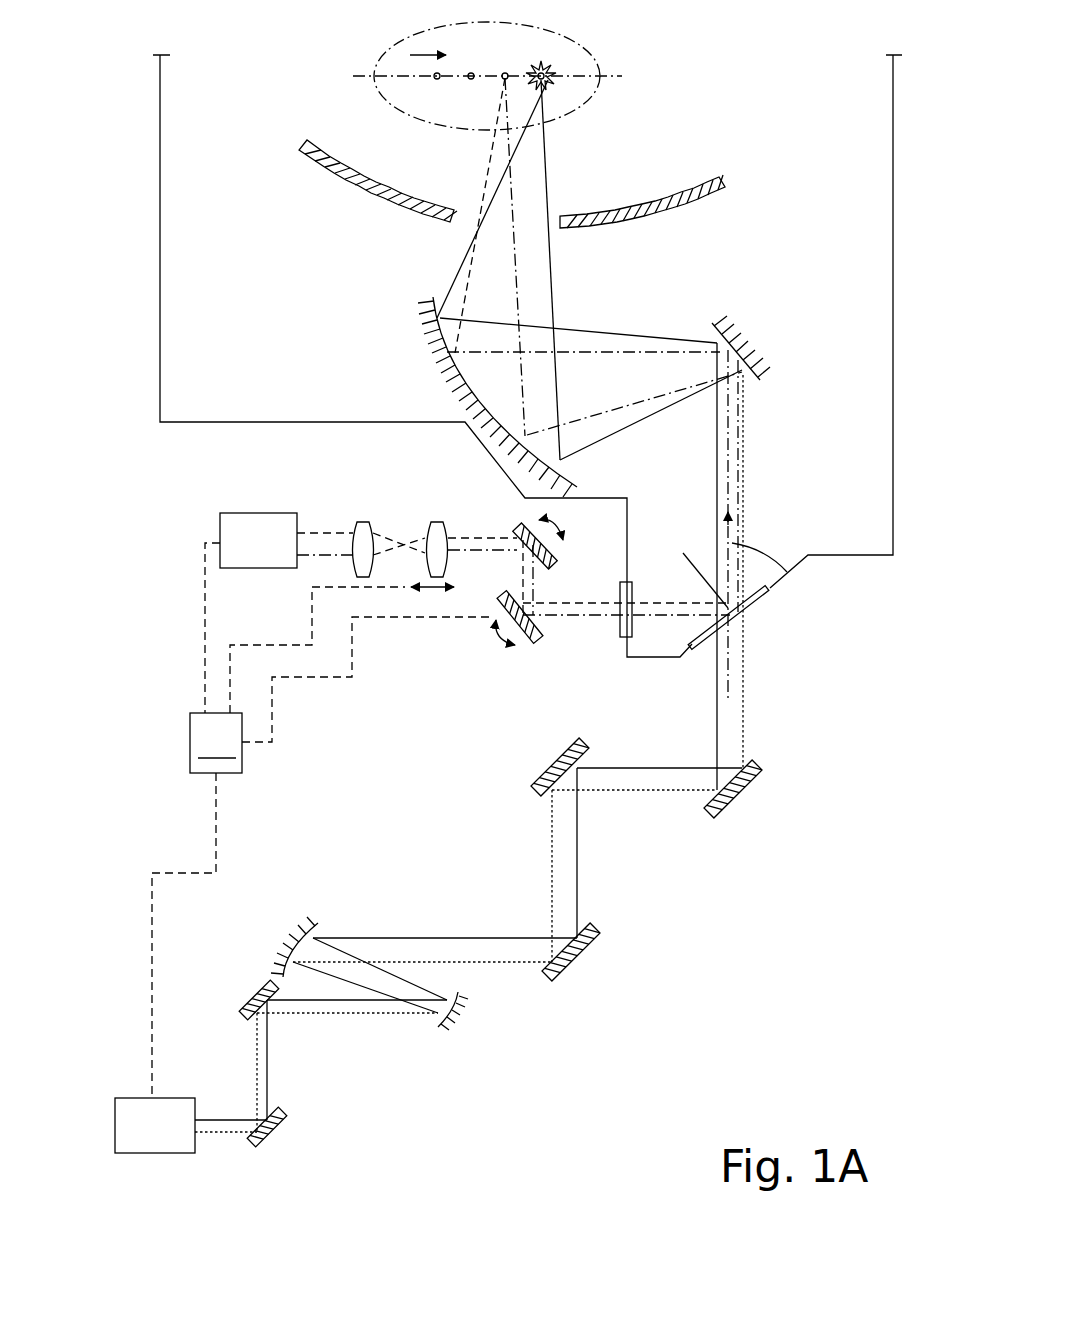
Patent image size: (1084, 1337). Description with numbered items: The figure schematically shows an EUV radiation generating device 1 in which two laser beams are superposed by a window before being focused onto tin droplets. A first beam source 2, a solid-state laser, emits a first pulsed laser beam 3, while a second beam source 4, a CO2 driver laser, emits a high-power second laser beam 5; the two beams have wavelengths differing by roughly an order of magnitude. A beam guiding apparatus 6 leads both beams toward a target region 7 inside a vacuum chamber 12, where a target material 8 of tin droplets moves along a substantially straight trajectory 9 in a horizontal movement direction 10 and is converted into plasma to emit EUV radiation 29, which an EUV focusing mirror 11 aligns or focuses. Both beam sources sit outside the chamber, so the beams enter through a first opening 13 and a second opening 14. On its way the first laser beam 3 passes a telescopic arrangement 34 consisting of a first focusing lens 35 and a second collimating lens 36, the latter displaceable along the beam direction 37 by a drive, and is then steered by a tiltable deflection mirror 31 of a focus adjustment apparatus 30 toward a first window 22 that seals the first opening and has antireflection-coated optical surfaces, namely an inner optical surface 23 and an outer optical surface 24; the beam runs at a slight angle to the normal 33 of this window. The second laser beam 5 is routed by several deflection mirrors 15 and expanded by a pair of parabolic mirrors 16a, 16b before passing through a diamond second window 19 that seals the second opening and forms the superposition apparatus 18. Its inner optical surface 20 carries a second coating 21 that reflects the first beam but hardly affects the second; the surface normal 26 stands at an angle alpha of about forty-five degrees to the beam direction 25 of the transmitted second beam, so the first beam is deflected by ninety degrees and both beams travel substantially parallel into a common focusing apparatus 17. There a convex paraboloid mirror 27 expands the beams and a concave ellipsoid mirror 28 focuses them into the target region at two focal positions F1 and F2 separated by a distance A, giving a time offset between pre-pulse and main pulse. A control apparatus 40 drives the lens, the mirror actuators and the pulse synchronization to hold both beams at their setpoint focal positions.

The EUV radiation generating device 1 is at (154, 36).
The first beam source 2 is at (233, 527).
The first laser beam 3 is at (323, 543).
The second beam source 4 is at (140, 1130).
The second laser beam 5 is at (736, 738).
The beam guiding apparatus 6 is at (777, 954).
The target region 7 is at (576, 113).
The target material 8 is at (471, 80).
The trajectory 9 is at (620, 78).
The movement direction 10 is at (427, 55).
The EUV focusing mirror 11 is at (700, 180).
The vacuum chamber 12 is at (162, 240).
The first opening 13 is at (611, 629).
The second opening 14 is at (767, 619).
The deflection mirrors 15 is at (550, 776).
The parabolic mirror 16a is at (460, 1008).
The parabolic mirror 16b is at (295, 942).
The common focusing apparatus 17 is at (606, 378).
The superposition apparatus 18 is at (759, 634).
The second window 19 is at (771, 599).
The second optical surface 20 is at (690, 638).
The second coating 21 is at (706, 630).
The first window 22 is at (630, 597).
The optical surface 23 is at (640, 622).
The optical surface 24 is at (612, 600).
The beam direction 25 is at (733, 528).
The normal 26 is at (692, 550).
The paraboloid mirror 27 is at (736, 345).
The ellipsoid mirror 28 is at (445, 355).
The EUV radiation 29 is at (553, 74).
The focus adjustment apparatus 30 is at (470, 642).
The deflection mirror 31 is at (535, 648).
The normal 33 is at (590, 616).
The telescopic arrangement 34 is at (393, 516).
The first focusing lens 35 is at (360, 526).
The second collimating lens 36 is at (448, 522).
The beam direction 37 is at (430, 592).
The open-loop/closed-loop control apparatus 40 is at (322, 820).
The distance A is at (522, 66).
The focal position F1 is at (506, 66).
The focal position F2 is at (550, 62).
The angle alpha is at (759, 564).